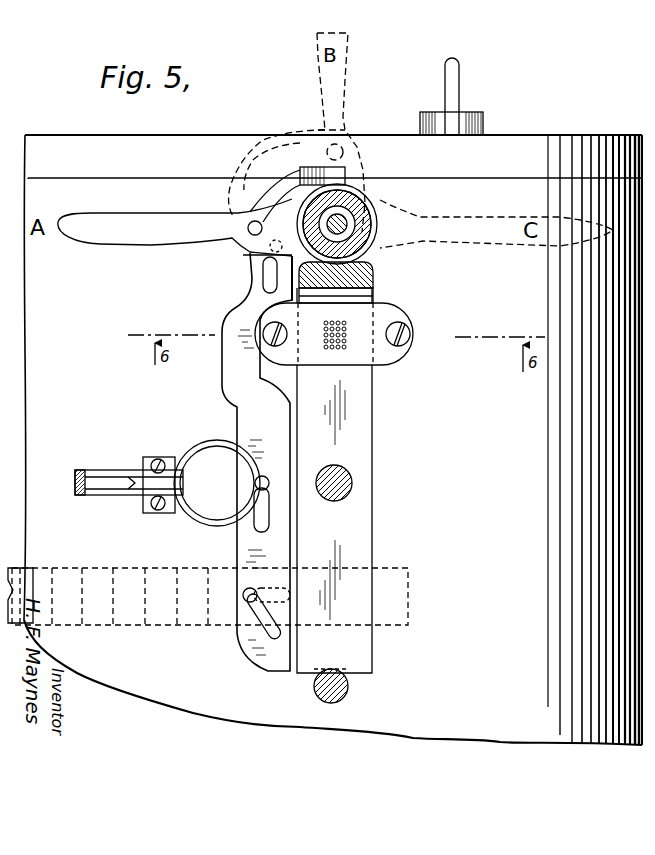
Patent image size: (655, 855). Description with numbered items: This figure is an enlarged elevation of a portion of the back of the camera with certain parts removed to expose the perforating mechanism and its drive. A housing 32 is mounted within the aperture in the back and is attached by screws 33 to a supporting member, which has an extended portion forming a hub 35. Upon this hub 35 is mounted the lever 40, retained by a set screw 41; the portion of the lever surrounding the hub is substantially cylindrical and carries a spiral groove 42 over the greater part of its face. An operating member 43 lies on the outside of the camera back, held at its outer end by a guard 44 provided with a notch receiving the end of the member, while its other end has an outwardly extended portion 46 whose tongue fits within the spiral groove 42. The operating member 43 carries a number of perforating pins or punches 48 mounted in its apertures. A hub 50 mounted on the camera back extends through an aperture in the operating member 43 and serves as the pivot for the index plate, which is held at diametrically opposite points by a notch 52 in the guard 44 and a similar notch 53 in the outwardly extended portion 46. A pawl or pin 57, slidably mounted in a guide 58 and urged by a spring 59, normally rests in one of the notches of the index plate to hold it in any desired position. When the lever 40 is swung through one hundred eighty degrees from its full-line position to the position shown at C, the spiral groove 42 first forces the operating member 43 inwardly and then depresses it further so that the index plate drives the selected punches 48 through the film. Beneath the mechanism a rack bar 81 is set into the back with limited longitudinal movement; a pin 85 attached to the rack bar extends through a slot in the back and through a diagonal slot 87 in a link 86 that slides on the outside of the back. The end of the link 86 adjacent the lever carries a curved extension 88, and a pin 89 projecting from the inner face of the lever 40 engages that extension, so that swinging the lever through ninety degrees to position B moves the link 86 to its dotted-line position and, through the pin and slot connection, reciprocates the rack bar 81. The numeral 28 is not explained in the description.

The base plate 28 is at (51, 280).
The housing 32 is at (385, 360).
The screws 33 is at (402, 333).
The hub 35 is at (347, 240).
The lever 40 is at (160, 238).
The set screw 41 is at (380, 210).
The spiral groove 42 is at (378, 229).
The operating member 43 is at (360, 518).
The guard 44 is at (349, 692).
The outwardly extended portion 46 is at (374, 277).
The perforating pins or punches 48 is at (337, 358).
The hub 50 is at (352, 484).
The notch 52 is at (349, 668).
The notch 53 is at (375, 294).
The pawl or pin 57 is at (108, 475).
The guide 58 is at (110, 497).
The spring 59 is at (222, 428).
The rack bar 81 is at (17, 595).
The pin 85 is at (245, 601).
The link 86 is at (247, 547).
The diagonal slot 87 is at (273, 640).
The curved extension 88 is at (290, 182).
The pin 89 is at (250, 226).